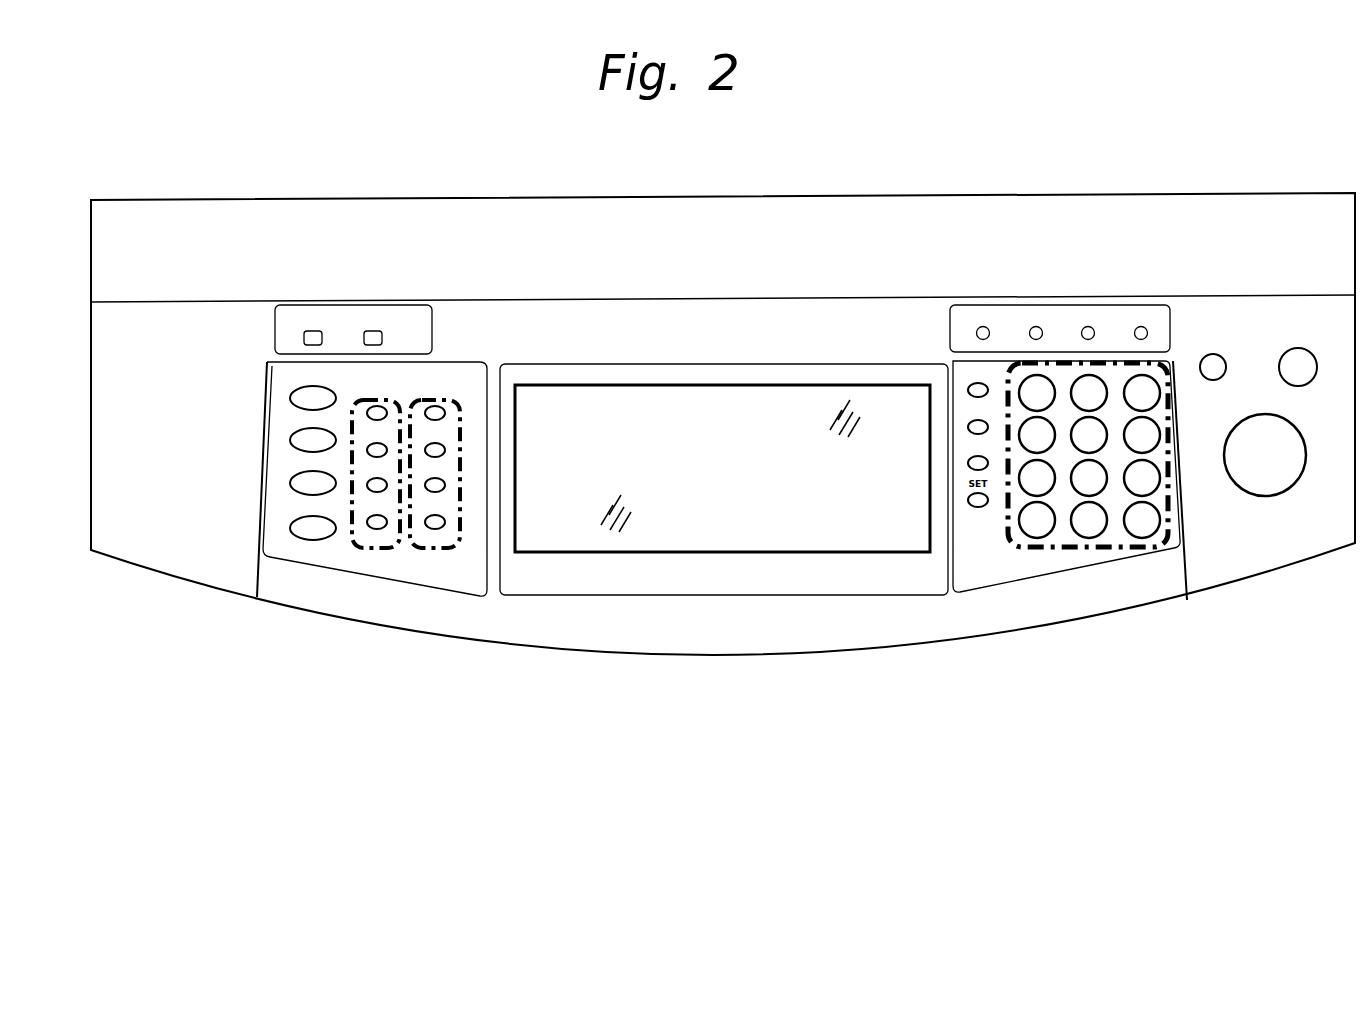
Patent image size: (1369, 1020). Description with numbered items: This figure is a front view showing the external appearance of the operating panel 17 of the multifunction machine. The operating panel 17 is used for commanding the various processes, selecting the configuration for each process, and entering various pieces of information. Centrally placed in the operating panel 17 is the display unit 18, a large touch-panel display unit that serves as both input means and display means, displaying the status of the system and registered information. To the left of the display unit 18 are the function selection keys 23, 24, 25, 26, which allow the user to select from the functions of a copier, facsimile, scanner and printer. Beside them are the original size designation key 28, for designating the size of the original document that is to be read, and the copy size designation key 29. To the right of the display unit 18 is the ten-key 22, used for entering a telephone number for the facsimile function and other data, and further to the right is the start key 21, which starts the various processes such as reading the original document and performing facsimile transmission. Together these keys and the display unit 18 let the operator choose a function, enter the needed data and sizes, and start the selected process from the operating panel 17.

The operating panel 17 is at (1063, 170).
The display unit 18 is at (780, 552).
The start key 21 is at (1265, 497).
The ten-key 22 is at (1113, 547).
The function selection key 23 is at (290, 398).
The function selection key 24 is at (290, 440).
The function selection key 25 is at (290, 483).
The function selection key 26 is at (290, 528).
The original size designation key 28 is at (373, 550).
The copy size designation key 29 is at (438, 550).